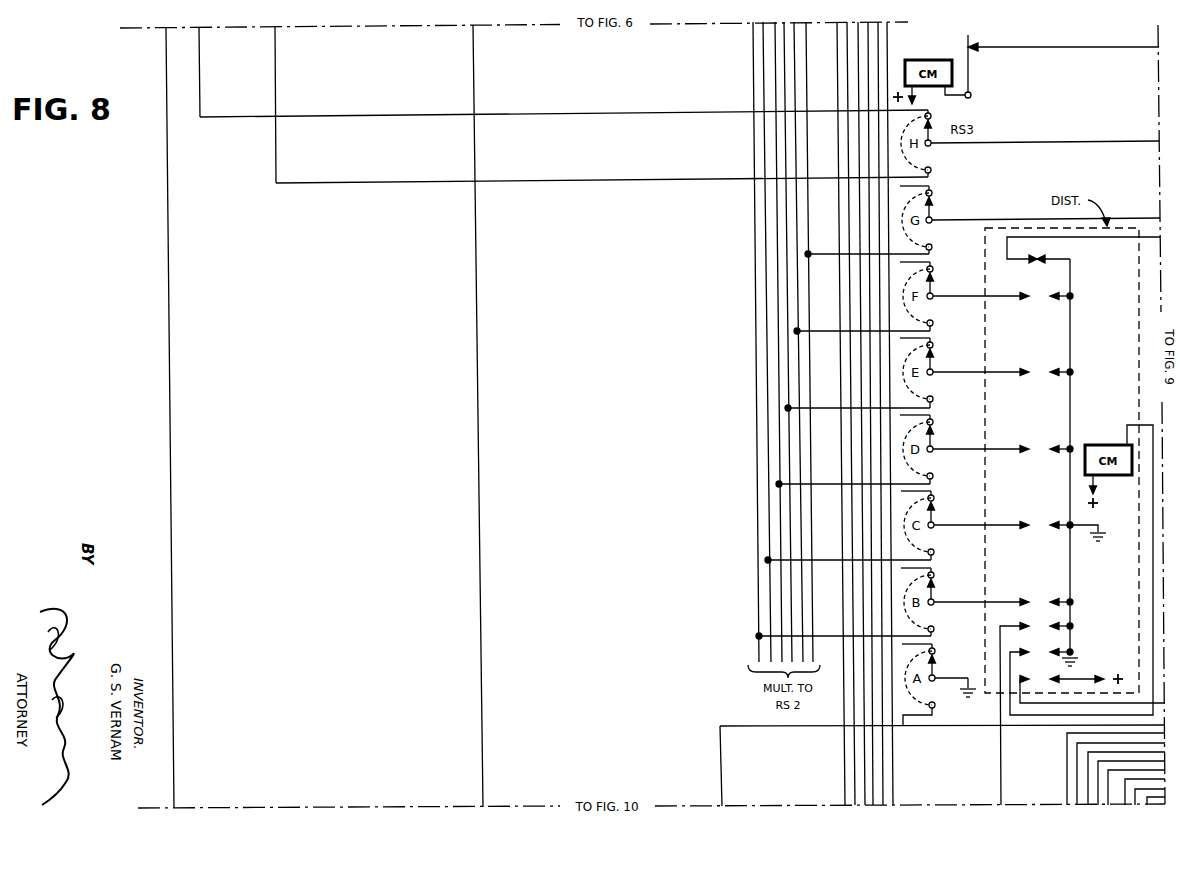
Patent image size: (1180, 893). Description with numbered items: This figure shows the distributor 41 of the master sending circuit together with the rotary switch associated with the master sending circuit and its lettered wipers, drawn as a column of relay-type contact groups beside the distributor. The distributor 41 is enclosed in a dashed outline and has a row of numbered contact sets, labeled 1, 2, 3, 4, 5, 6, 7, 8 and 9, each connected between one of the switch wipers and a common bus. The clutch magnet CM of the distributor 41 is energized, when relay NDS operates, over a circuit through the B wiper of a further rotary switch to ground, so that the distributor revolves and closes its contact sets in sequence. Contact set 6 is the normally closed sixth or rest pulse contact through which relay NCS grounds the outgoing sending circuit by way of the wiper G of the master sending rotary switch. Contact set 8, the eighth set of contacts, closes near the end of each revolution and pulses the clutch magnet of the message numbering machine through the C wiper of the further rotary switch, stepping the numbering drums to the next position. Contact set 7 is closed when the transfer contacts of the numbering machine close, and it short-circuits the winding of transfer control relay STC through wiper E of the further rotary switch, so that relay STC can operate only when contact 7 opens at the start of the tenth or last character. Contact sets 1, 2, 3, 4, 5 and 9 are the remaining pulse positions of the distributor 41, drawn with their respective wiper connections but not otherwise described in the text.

The distributor segment 1 is at (1003, 296).
The distributor segment 2 is at (1003, 372).
The distributor segment 3 is at (1003, 449).
The distributor segment 4 is at (1020, 529).
The distributor segment 5 is at (1003, 602).
The sixth or rest pulse contacts 6 is at (1037, 251).
The contacts No. 7 is at (1036, 711).
The contacts No. 8 is at (1081, 570).
The distributor segment 9 is at (1092, 687).
The distributor 41 is at (985, 336).